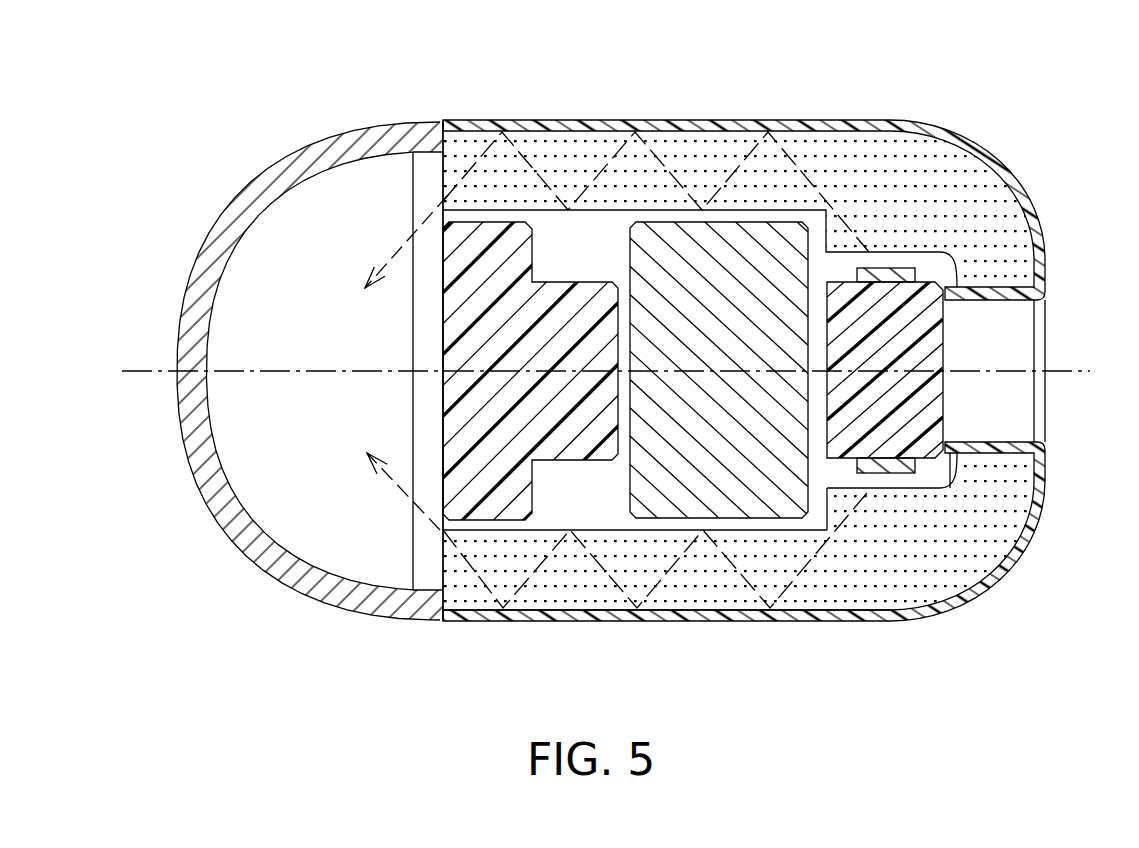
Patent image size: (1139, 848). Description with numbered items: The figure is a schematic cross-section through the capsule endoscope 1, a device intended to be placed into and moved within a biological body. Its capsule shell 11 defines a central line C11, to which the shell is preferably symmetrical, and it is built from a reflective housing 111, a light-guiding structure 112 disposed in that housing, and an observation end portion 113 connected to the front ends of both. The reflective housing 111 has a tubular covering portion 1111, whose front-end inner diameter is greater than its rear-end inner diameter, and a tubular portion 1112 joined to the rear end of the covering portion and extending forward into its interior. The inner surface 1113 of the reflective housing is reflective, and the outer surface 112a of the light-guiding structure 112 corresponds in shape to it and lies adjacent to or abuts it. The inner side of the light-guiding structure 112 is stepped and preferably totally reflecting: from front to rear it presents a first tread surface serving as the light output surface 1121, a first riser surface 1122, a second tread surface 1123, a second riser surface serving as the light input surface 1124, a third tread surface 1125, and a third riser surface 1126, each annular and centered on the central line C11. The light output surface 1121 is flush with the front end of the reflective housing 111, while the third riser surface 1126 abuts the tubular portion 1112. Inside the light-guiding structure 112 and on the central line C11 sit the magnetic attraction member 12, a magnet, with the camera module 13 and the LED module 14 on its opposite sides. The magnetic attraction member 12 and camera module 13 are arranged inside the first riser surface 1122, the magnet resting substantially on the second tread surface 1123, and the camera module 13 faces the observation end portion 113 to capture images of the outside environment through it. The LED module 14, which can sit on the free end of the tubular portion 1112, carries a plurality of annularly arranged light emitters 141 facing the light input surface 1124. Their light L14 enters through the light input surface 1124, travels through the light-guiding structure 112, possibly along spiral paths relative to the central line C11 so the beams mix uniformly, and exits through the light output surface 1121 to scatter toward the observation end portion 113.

The capsule endoscope 1 is at (172, 138).
The capsule shell 11 is at (603, 52).
The reflective housing 111 is at (784, 335).
The covering portion 1111 is at (666, 131).
The tubular portion 1112 is at (998, 292).
The inner surface 1113 is at (829, 146).
The light-guiding structure 112 is at (739, 374).
The light output surface 1121 is at (428, 560).
The first riser surface 1122 is at (584, 515).
The second tread surface 1123 is at (805, 512).
The light input surface 1124 is at (911, 471).
The third tread surface 1125 is at (937, 472).
The third riser surface 1126 is at (1022, 438).
The outer surface 112a is at (678, 622).
The observation end portion 113 is at (372, 122).
The magnetic attraction member 12 is at (727, 218).
The camera module 13 is at (432, 334).
The LED module 14 is at (952, 335).
The light emitters 141 is at (898, 266).
The light L14 is at (397, 250).
The central line C11 is at (137, 371).